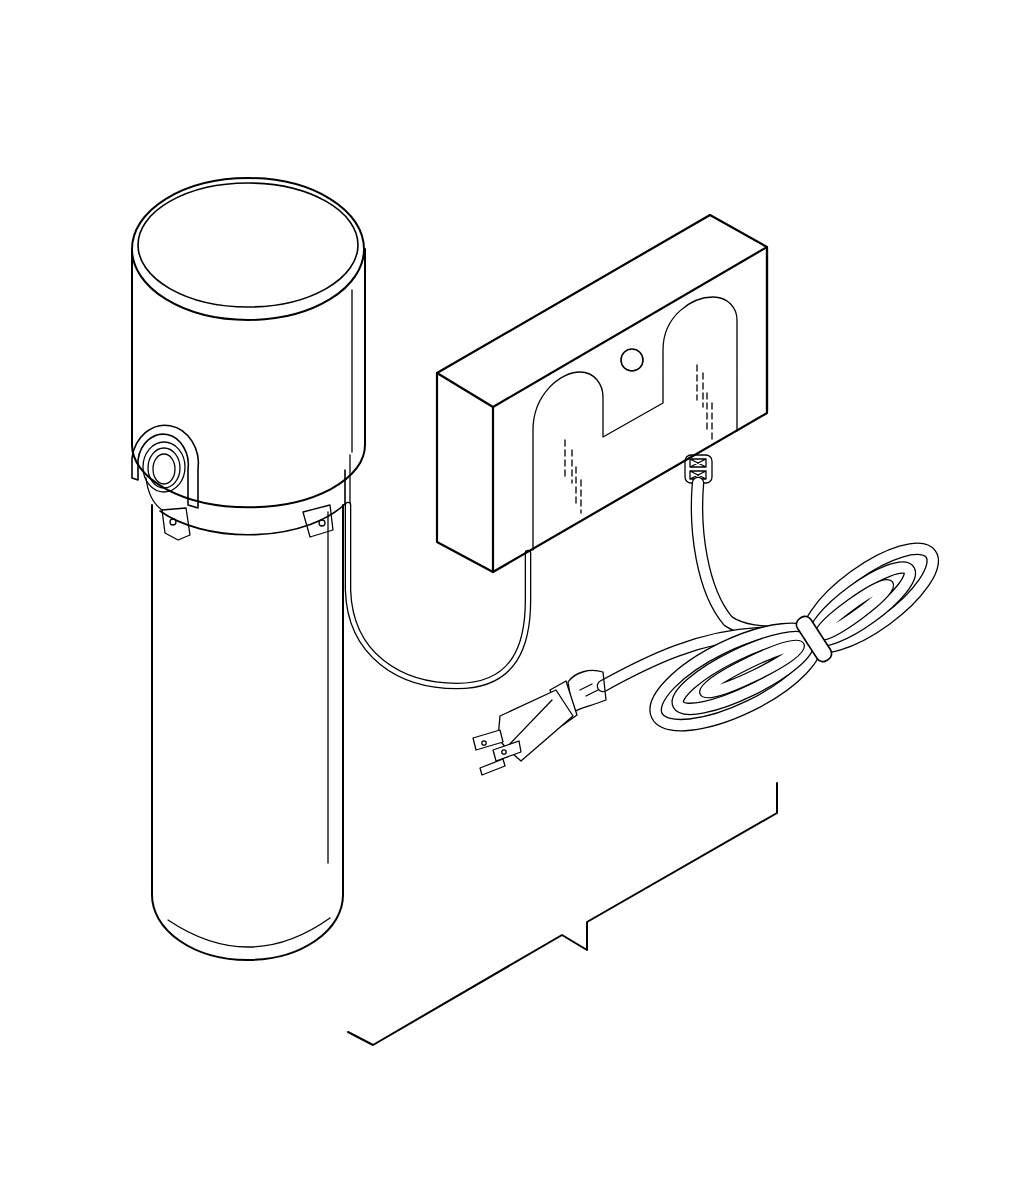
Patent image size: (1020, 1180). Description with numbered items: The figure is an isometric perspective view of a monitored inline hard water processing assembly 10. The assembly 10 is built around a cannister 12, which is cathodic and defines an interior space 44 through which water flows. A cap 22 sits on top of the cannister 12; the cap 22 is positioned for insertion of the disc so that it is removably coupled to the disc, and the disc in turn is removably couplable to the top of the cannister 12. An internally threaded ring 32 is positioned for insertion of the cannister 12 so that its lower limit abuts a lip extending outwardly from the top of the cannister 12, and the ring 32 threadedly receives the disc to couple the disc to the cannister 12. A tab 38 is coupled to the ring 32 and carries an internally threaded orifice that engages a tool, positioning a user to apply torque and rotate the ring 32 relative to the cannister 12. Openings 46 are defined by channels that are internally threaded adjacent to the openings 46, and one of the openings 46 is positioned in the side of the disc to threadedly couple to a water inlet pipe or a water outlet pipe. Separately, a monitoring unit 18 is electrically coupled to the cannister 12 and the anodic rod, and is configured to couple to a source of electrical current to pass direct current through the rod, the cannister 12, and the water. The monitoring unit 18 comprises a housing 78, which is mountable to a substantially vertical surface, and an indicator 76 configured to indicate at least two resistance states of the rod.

The monitored inline hard water processing assembly 10 is at (535, 108).
The cannister 12 is at (152, 695).
The monitoring unit 18 is at (742, 225).
The cap 22 is at (128, 340).
The ring 32 is at (235, 527).
The tab 38 is at (157, 523).
The interior space 44 is at (208, 767).
The openings 46 is at (157, 463).
The indicator 76 is at (624, 352).
The housing 78 is at (770, 269).